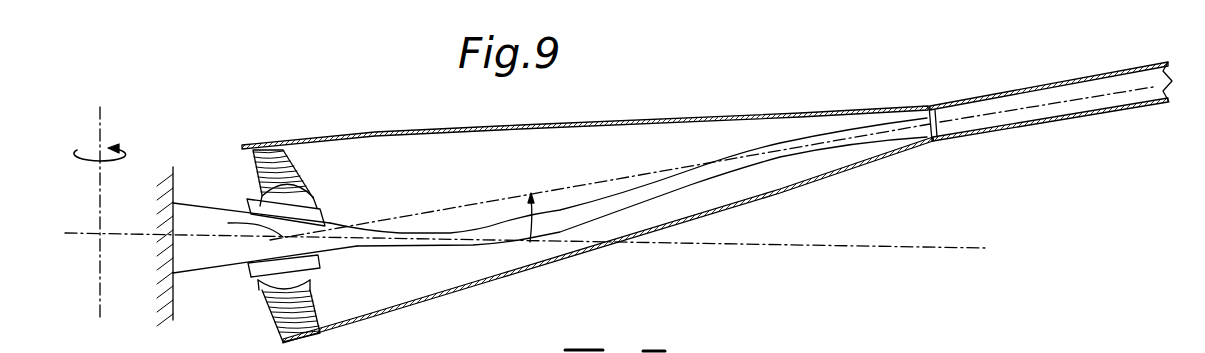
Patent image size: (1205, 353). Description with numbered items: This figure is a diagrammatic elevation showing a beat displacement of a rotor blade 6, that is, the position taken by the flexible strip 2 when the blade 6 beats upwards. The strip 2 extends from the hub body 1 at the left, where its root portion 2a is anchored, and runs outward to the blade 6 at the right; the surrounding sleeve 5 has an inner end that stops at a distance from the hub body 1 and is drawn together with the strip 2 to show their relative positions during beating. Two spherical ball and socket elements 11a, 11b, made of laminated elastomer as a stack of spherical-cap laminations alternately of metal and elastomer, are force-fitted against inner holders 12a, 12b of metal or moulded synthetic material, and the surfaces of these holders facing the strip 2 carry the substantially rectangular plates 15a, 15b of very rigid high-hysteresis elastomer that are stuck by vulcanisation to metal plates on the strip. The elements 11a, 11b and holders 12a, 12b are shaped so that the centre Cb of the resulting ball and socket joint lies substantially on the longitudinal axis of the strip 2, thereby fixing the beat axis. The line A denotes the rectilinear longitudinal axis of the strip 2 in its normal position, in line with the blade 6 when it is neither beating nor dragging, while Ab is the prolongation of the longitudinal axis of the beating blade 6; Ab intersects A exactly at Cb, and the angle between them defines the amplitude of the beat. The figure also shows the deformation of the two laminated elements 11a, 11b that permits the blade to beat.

The hub body 1 is at (175, 299).
The flexible strip 2 is at (585, 205).
The belt end portion 2a is at (186, 214).
The sleeve 5 is at (680, 116).
The blade 6 is at (1035, 84).
The spherical ball and socket element 11a is at (283, 312).
The spherical ball and socket element 11b is at (300, 170).
The inner holder 12a is at (300, 280).
The inner holder 12b is at (300, 202).
The rectangular plate 15a is at (248, 270).
The rectangular plate 15b is at (247, 203).
The rectilinear longitudinal axis A is at (908, 248).
The prolongation of the blade longitudinal axis Ab is at (498, 198).
The centre of the ball and socket joint Cb is at (240, 224).